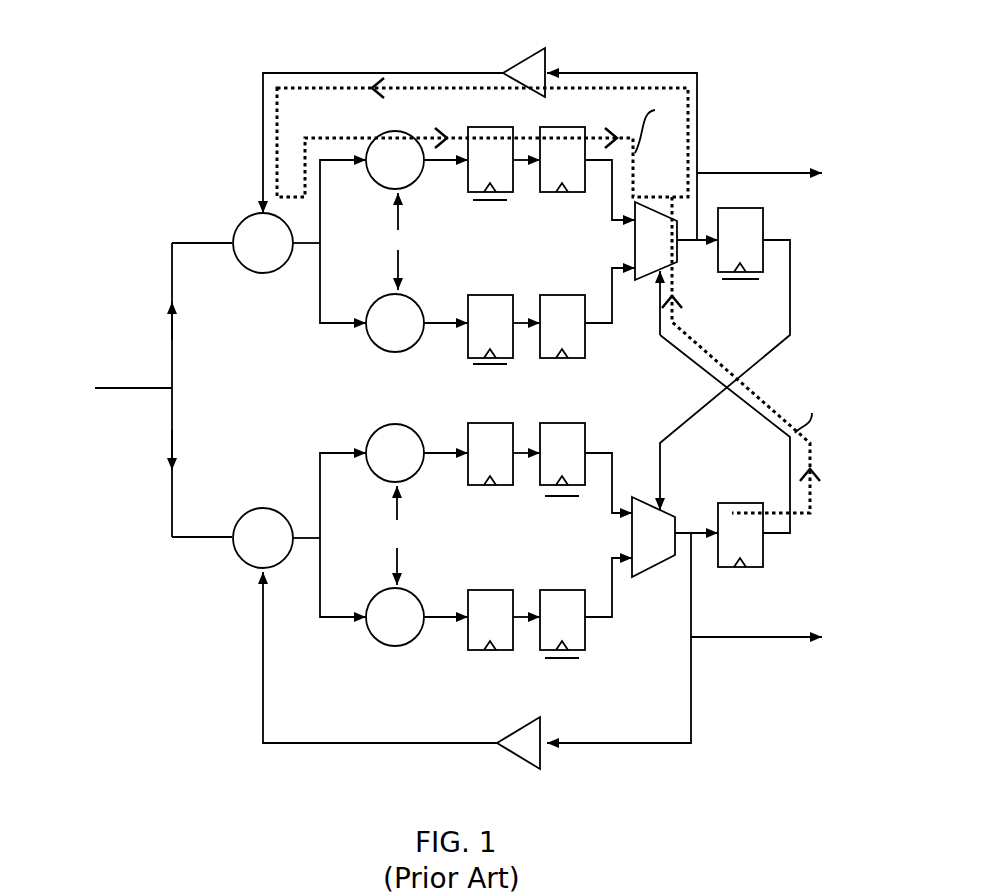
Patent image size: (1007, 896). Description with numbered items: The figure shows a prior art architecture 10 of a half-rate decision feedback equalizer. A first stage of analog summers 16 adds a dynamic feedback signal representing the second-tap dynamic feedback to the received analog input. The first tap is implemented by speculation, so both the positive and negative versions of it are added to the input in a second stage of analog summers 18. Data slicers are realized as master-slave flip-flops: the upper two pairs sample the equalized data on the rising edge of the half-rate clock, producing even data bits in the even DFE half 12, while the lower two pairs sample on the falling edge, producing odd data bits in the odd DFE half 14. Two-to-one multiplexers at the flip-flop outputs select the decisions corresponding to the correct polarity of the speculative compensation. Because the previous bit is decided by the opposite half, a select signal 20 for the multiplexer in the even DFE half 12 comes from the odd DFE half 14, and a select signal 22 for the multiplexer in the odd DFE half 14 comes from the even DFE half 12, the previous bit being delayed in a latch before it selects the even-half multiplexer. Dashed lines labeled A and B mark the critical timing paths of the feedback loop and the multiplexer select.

The prior art architecture 10 is at (116, 120).
The even DFE half 12 is at (155, 230).
The odd DFE half 14 is at (162, 579).
The first stage of analog summers 16 is at (263, 273).
The second stage of analog summers 18 is at (416, 182).
The select signal 20 is at (775, 430).
The select signal 22 is at (683, 422).